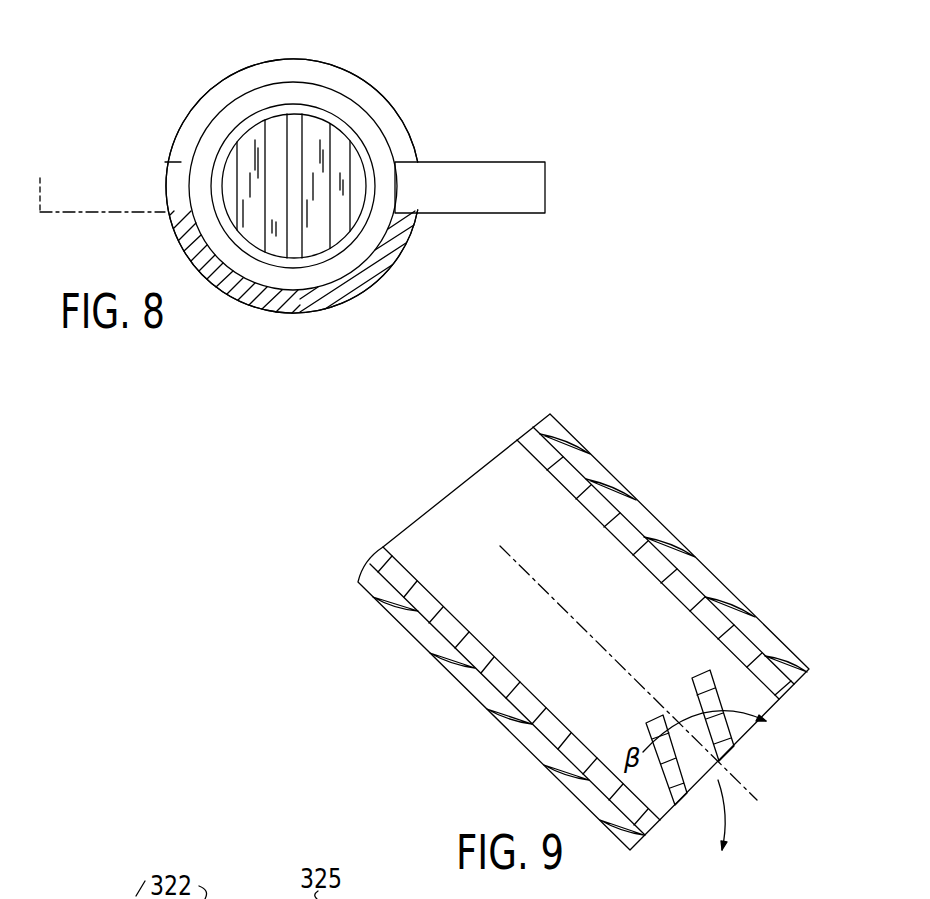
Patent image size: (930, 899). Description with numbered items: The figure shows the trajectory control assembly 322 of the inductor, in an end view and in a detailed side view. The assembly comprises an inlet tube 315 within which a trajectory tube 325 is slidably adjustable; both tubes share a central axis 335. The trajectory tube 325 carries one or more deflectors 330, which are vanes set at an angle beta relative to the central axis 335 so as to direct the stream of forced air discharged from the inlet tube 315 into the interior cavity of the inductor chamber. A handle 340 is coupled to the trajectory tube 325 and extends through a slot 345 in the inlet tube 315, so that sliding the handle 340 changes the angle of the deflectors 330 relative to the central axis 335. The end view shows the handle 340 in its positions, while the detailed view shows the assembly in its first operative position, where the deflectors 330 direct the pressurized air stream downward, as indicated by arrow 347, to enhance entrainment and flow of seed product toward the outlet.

In FIG. 8, the inlet tube 315 is at (303, 313).
In FIG. 9, the inlet tube 315 is at (422, 632).
In FIG. 8, the trajectory control assembly 322 is at (400, 78).
In FIG. 9, the trajectory control assembly 322 is at (482, 455).
In FIG. 8, the trajectory tube 325 is at (247, 91).
In FIG. 9, the trajectory tube 325 is at (587, 452).
In FIG. 8, the deflectors 330 is at (340, 148).
In FIG. 9, the deflectors 330 is at (683, 718).
In FIG. 9, the central axis 335 is at (606, 652).
In FIG. 8, the handle 340 is at (463, 213).
In FIG. 8, the slot 345 is at (187, 115).
In FIG. 9, the arrow 347 is at (718, 810).